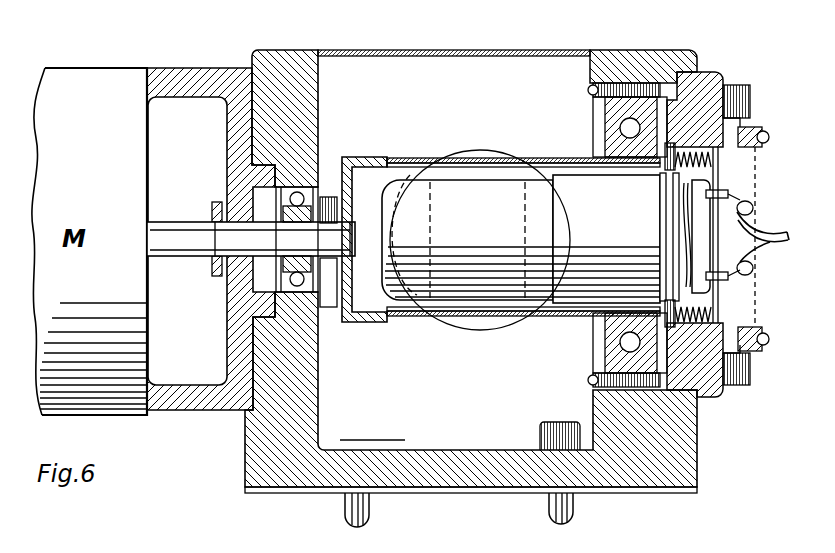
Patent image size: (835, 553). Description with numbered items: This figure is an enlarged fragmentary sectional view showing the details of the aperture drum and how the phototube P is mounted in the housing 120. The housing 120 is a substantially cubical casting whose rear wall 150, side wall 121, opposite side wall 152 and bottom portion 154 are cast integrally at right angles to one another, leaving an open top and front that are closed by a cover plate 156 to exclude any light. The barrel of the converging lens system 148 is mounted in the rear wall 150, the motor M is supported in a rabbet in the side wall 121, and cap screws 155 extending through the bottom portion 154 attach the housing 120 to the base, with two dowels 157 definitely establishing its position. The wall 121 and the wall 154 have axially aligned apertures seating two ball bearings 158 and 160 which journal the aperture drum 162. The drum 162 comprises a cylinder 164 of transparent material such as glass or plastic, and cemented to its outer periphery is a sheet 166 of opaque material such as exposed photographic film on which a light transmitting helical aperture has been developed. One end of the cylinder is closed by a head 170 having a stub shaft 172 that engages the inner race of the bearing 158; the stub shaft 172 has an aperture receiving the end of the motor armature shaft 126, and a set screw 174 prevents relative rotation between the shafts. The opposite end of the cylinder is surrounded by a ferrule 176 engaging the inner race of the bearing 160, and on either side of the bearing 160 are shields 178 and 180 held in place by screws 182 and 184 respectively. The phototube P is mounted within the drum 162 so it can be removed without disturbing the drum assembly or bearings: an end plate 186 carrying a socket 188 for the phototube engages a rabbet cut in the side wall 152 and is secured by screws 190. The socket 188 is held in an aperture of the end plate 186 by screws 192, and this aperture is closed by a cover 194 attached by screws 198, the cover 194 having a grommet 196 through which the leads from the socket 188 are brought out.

The housing 120 is at (310, 506).
The side wall 121 is at (249, 438).
The motor armature shaft 126 is at (170, 222).
The converging lens system 148 is at (480, 152).
The rear wall 150 is at (471, 271).
The opposite side wall 152 is at (677, 450).
The bottom portion 154 is at (470, 470).
The cap screws 155 is at (540, 433).
The cover plate 156 is at (410, 50).
The dowels 157 is at (372, 512).
The ball bearing 158 is at (313, 317).
The ball bearing 160 is at (633, 365).
The aperture drum 162 is at (463, 317).
The cylinder 164 is at (418, 162).
The sheet of opaque material 166 is at (397, 158).
The head 170 is at (358, 157).
The stub shaft 172 is at (237, 290).
The set screw 174 is at (327, 195).
The ferrule 176 is at (575, 158).
The shield 178 is at (590, 80).
The shield 180 is at (664, 60).
The screws 182 is at (598, 88).
The screws 184 is at (602, 80).
The end plate 186 is at (702, 75).
The socket 188 is at (700, 242).
The screws 190 is at (724, 84).
The screws 192 is at (668, 170).
The cover 194 is at (739, 235).
The grommet 196 is at (687, 212).
The screws 198 is at (755, 125).